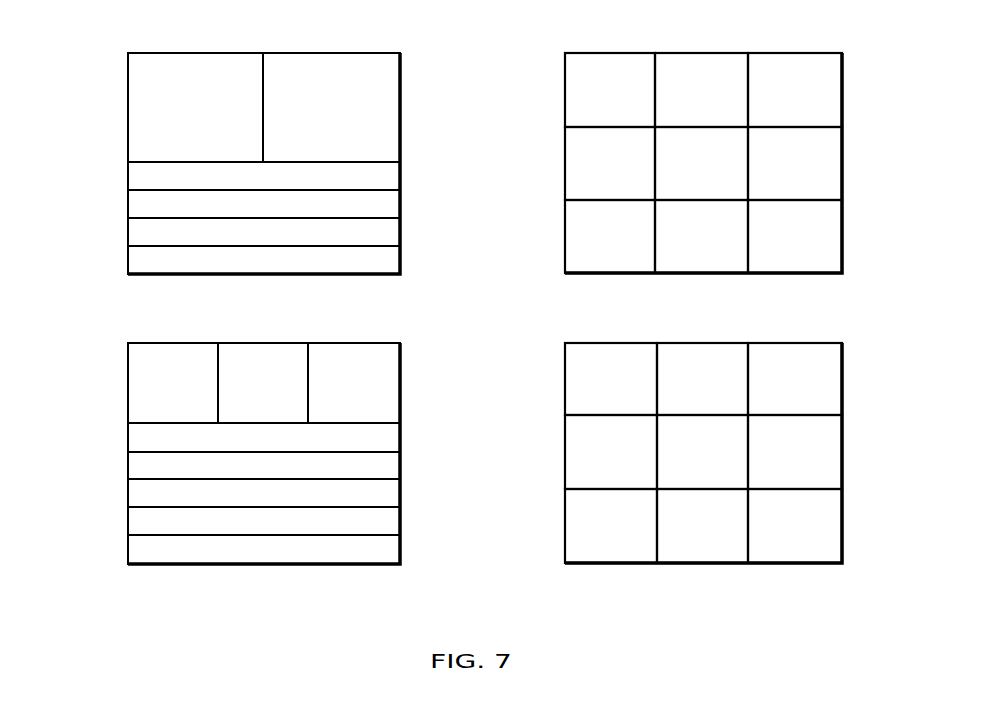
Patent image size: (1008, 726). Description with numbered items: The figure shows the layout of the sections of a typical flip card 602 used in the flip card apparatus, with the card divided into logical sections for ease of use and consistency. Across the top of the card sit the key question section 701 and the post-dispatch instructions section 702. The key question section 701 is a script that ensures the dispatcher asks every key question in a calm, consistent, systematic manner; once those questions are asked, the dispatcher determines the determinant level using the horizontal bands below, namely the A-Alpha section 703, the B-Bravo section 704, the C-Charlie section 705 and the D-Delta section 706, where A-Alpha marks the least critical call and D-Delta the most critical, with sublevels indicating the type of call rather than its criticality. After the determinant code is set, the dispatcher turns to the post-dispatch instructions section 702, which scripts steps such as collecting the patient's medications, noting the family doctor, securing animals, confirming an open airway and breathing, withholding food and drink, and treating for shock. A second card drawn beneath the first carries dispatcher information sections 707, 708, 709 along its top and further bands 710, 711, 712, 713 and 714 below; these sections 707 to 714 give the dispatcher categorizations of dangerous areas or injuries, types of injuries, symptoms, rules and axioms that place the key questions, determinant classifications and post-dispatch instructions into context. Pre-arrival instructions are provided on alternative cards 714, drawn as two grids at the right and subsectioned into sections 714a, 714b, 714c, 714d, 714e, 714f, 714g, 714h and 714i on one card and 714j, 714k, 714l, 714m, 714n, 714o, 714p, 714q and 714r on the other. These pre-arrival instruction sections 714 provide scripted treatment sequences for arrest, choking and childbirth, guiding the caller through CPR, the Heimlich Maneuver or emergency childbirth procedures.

The flip card 602 is at (128, 104).
The key question section 701 is at (208, 67).
The post-dispatch instructions section 702 is at (385, 108).
The A-Alpha section 703 is at (375, 177).
The B-Bravo section 704 is at (378, 203).
The C-Charlie section 705 is at (385, 231).
The D-Delta section 706 is at (385, 259).
The dispatcher information section 707 is at (380, 388).
The dispatcher information section 708 is at (268, 350).
The dispatcher information section 709 is at (152, 377).
The dispatcher information section 710 is at (375, 437).
The dispatcher information section 711 is at (375, 467).
The dispatcher information section 712 is at (377, 493).
The dispatcher information section 713 is at (385, 521).
The pre-arrival instruction sections 714 is at (385, 550).
The pre-arrival instruction subsection 714a is at (590, 84).
The pre-arrival instruction subsection 714b is at (590, 163).
The pre-arrival instruction subsection 714c is at (587, 234).
The pre-arrival instruction subsection 714d is at (682, 60).
The pre-arrival instruction subsection 714e is at (712, 135).
The pre-arrival instruction subsection 714f is at (828, 85).
The pre-arrival instruction subsection 714g is at (822, 155).
The pre-arrival instruction subsection 714h is at (818, 219).
The pre-arrival instruction subsection 714i is at (702, 253).
The pre-arrival instruction subsection 714j is at (592, 377).
The pre-arrival instruction subsection 714k is at (590, 457).
The pre-arrival instruction subsection 714l is at (587, 529).
The pre-arrival instruction subsection 714m is at (683, 355).
The pre-arrival instruction subsection 714n is at (712, 428).
The pre-arrival instruction subsection 714o is at (830, 380).
The pre-arrival instruction subsection 714p is at (823, 448).
The pre-arrival instruction subsection 714q is at (818, 517).
The pre-arrival instruction subsection 714r is at (702, 548).